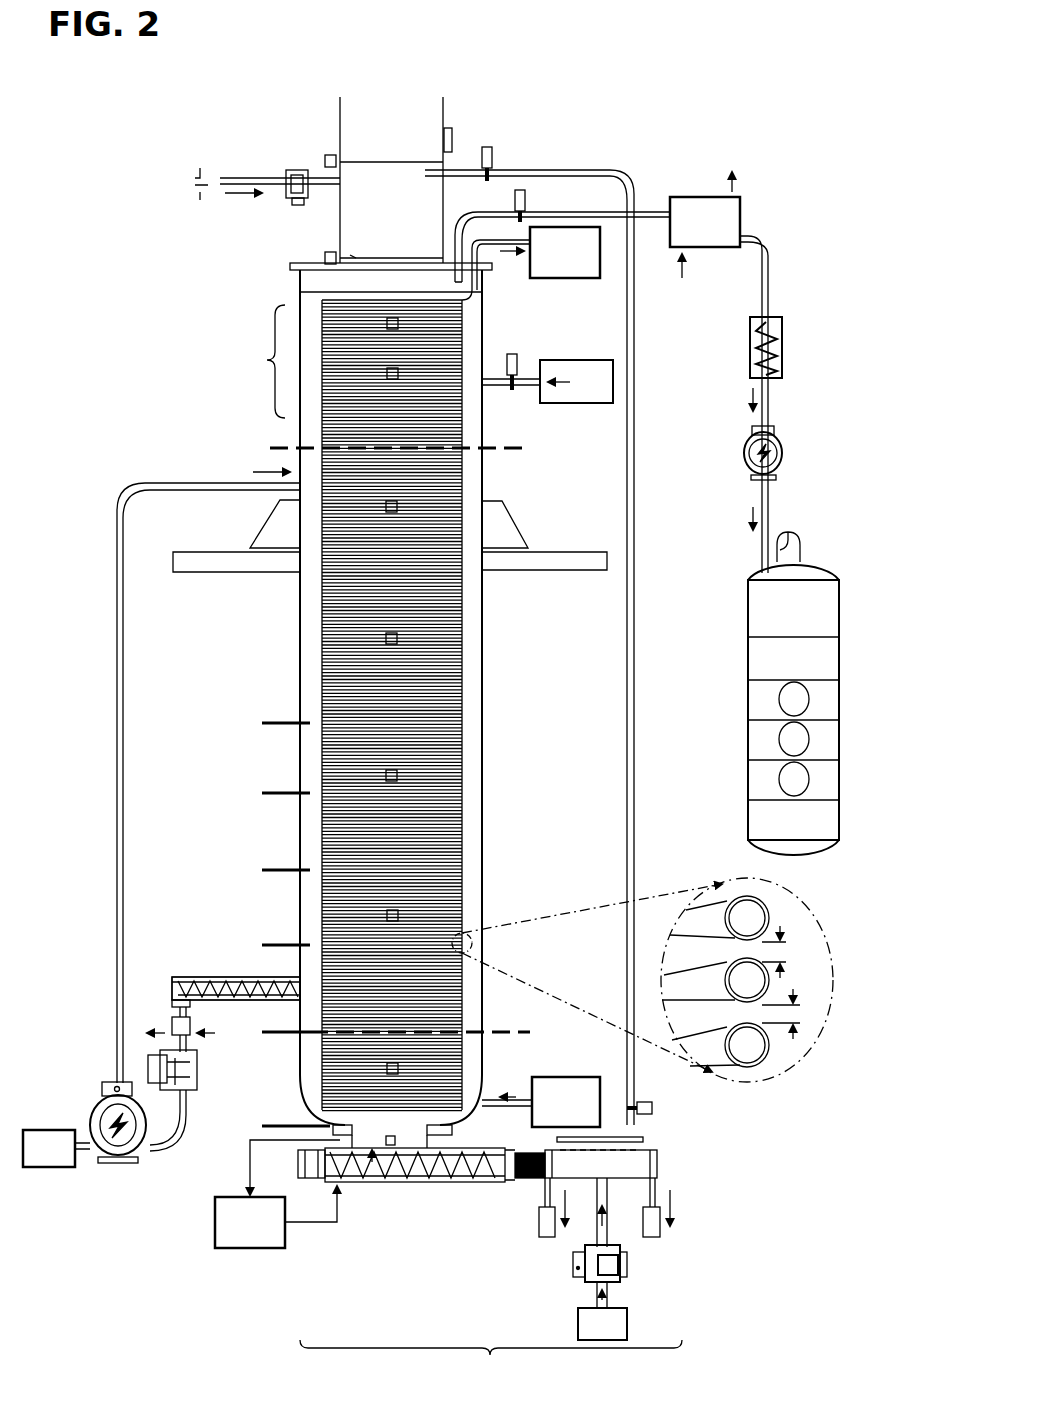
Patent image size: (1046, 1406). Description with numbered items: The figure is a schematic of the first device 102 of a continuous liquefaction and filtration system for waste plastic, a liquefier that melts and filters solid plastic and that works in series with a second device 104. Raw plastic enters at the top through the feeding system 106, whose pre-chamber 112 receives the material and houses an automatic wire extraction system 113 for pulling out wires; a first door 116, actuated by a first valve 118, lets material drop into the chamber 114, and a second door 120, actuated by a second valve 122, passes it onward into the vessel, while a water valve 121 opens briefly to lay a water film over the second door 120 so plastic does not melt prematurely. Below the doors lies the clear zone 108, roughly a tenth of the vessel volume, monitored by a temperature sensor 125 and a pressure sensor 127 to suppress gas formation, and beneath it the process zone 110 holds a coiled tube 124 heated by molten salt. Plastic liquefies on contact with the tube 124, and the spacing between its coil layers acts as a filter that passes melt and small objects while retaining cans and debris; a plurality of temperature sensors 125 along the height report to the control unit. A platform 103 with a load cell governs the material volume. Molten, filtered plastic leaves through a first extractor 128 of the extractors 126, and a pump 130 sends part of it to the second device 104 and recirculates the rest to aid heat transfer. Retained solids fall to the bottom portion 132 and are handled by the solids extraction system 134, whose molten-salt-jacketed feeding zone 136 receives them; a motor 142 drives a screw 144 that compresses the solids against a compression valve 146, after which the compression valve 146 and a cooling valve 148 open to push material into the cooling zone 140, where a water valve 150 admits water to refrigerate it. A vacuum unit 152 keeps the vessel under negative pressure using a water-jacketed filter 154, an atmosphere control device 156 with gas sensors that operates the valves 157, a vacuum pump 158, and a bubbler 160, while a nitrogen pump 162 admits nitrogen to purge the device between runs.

The first device 102 is at (640, 132).
The platform 103 is at (517, 563).
The second device 104 is at (56, 1148).
The feeding system 106 is at (200, 113).
The clear zone 108 is at (255, 361).
The process zone 110 is at (494, 686).
The pre-chamber 112 is at (391, 180).
The automatic wire extraction system 113 is at (452, 130).
The chamber 114 is at (391, 228).
The first door 116 is at (455, 152).
The first valve 118 is at (325, 160).
The second door 120 is at (350, 255).
The water valve 121 is at (297, 170).
The second valve 122 is at (325, 258).
The tube 124 is at (464, 760).
The temperature sensors 125 is at (388, 378).
The extractors 126 is at (172, 977).
The pressure sensor 127 is at (398, 322).
The first extractor 128 is at (236, 988).
The pump 130 is at (115, 1165).
The bottom portion 132 is at (500, 1052).
The solids extraction system 134 is at (491, 1360).
The feeding zone 136 is at (372, 1172).
The cooling zone 140 is at (688, 1165).
The motor 142 is at (333, 1180).
The screw 144 is at (352, 1184).
The compression valve 146 is at (539, 1216).
The cooling valve 148 is at (656, 1240).
The water valve 150 is at (622, 1278).
The vacuum unit 152 is at (850, 210).
The filter 154 is at (705, 222).
The atmosphere control device 156 is at (783, 343).
The valves 157 is at (492, 155).
The vacuum pump 158 is at (783, 457).
The bubbler 160 is at (840, 738).
The nitrogen pump 162 is at (517, 358).